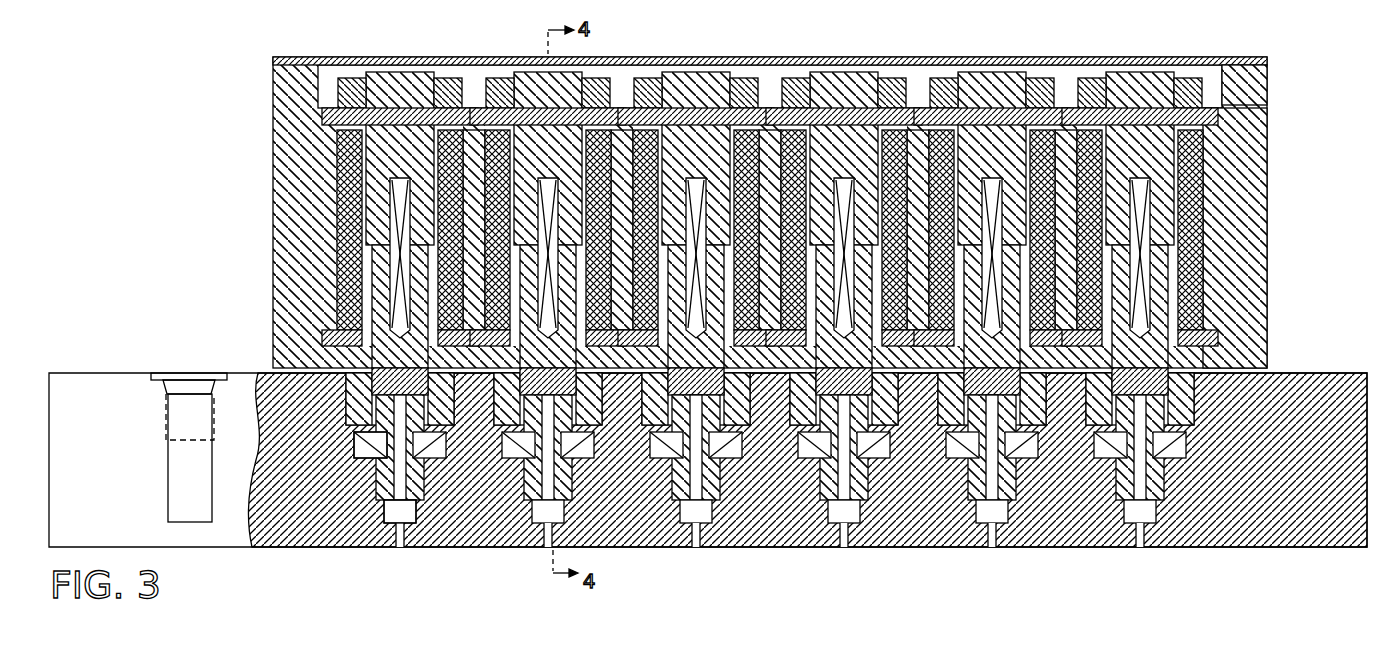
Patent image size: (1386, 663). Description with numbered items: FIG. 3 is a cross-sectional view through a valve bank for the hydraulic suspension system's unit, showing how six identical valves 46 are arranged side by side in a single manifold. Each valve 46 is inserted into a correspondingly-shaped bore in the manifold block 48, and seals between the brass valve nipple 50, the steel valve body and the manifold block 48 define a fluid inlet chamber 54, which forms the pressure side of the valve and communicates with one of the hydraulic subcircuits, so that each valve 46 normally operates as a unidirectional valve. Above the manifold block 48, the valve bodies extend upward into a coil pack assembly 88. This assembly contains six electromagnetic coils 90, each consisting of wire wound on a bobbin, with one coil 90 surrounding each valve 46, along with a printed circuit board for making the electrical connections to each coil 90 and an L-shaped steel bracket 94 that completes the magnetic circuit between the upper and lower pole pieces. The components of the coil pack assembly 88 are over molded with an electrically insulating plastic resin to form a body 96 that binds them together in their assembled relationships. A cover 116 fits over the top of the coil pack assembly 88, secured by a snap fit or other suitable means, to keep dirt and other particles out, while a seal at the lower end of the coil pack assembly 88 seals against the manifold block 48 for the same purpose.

The valve 46 is at (386, 72).
The manifold block 48 is at (1331, 370).
The valve nipple 50 is at (407, 503).
The fluid inlet chamber 54 is at (362, 455).
The coil pack assembly 88 is at (272, 205).
The electromagnetic coil 90 is at (480, 150).
The L-shaped steel bracket 94 is at (1212, 58).
The body 96 is at (1268, 248).
The cover 116 is at (1264, 72).